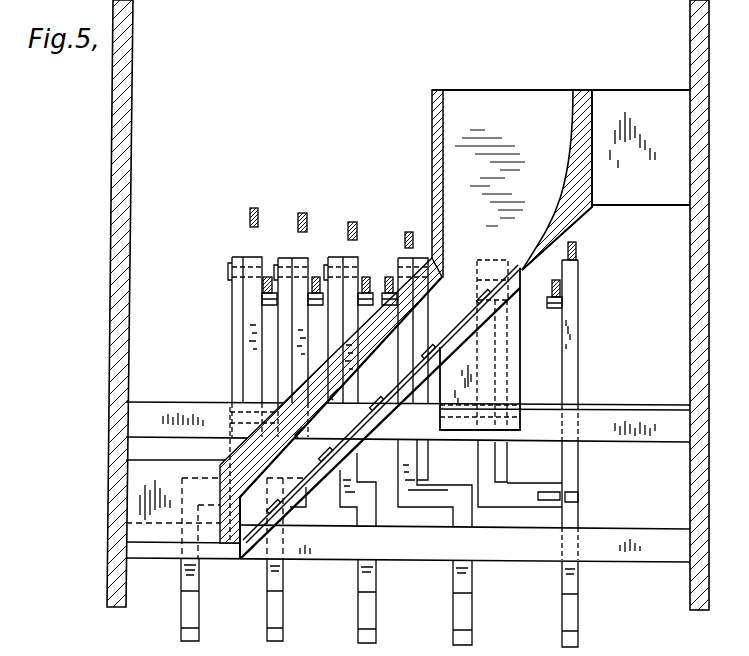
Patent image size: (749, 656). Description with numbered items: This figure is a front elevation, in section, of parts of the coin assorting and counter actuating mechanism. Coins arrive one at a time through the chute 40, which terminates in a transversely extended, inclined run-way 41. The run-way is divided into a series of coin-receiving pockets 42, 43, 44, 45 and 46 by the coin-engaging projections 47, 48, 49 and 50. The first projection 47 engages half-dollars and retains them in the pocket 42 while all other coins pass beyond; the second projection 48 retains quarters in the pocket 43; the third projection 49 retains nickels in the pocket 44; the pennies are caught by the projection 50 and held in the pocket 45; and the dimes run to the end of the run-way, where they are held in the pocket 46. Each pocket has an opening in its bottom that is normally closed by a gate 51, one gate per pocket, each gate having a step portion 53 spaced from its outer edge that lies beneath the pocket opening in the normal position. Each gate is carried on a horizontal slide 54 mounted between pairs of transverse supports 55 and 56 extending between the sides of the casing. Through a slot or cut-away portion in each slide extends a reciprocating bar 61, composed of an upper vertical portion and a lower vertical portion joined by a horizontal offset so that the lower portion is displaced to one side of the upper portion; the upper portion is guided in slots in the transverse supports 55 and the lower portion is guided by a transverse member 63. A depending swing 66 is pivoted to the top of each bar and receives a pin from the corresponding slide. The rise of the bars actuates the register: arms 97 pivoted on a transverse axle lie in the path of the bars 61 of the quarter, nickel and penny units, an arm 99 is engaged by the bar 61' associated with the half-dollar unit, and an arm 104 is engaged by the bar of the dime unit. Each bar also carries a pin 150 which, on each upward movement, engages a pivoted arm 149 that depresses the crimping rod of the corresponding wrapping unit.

The chute 40 is at (507, 97).
The inclined run-way 41 is at (405, 283).
The coin-receiving pocket 42 is at (487, 252).
The coin-receiving pocket 43 is at (457, 323).
The coin-receiving pocket 44 is at (387, 390).
The coin-receiving pocket 45 is at (321, 461).
The coin-receiving pocket 46 is at (242, 494).
The coin-engaging projection 47 is at (443, 277).
The coin-engaging projection 48 is at (386, 337).
The coin-engaging projection 49 is at (336, 395).
The coin-engaging projection 50 is at (299, 433).
The gate 51 is at (358, 443).
The step portion 53 is at (518, 268).
The horizontal slide 54 is at (457, 441).
The transverse support 55 is at (640, 442).
The transverse support 56 is at (657, 408).
The reciprocating bar 61 is at (379, 543).
The reciprocating bar 61' is at (580, 410).
The transverse member 63 is at (328, 552).
The depending swing 66 is at (280, 337).
The arm 97 is at (347, 227).
The arm 99 is at (578, 246).
The arm 104 is at (248, 215).
The pivoted arm 149 is at (316, 276).
The pin 150 is at (309, 303).